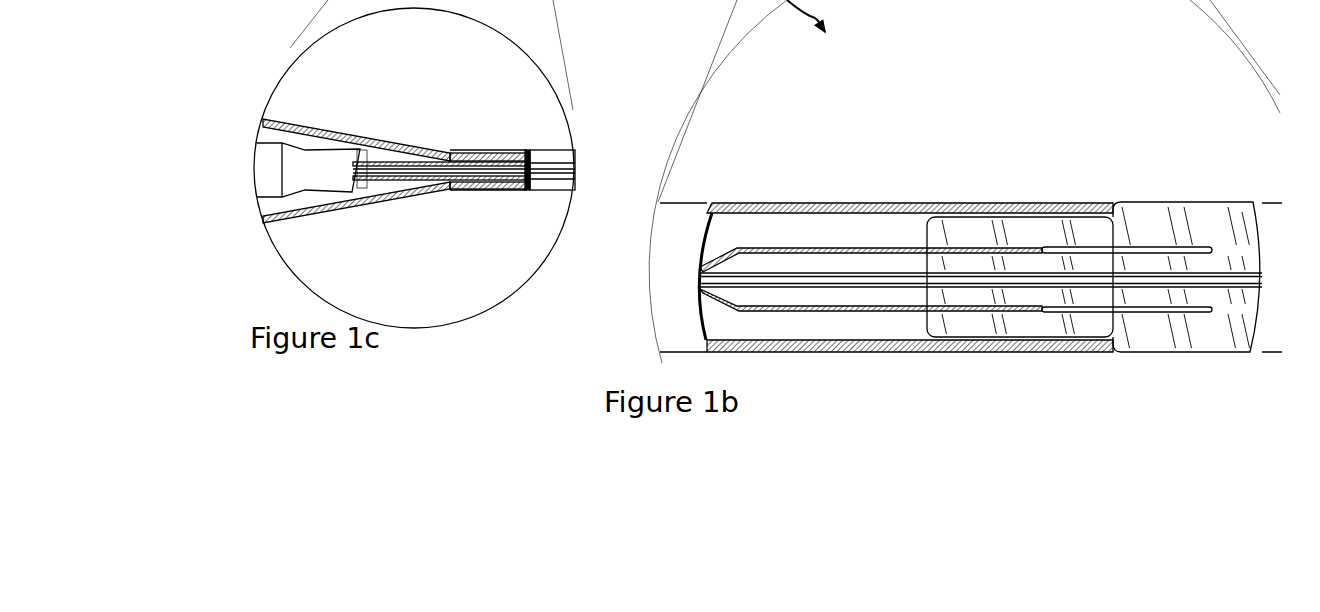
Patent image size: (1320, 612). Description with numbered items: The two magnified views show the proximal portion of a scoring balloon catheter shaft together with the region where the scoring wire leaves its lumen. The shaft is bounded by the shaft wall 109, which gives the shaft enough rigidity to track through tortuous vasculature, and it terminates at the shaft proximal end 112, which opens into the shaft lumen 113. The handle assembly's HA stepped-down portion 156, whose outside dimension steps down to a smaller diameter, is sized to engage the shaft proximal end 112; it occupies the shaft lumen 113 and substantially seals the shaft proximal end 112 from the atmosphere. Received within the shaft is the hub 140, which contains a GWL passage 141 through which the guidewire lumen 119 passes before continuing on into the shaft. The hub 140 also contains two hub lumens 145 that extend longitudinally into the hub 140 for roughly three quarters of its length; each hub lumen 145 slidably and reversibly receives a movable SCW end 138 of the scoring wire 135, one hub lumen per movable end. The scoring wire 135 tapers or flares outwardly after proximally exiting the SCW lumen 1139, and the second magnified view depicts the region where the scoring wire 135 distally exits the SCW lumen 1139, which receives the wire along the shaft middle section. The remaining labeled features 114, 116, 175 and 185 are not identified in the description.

In FIG. 1B, the shaft wall 109 is at (728, 205).
In FIG. 1B, the shaft proximal end 112 is at (1098, 168).
In FIG. 1B, the shaft lumen 113 is at (830, 233).
In FIG. 1B, the tube inner wall 114 is at (886, 220).
In FIG. 1C, the connector 116 is at (335, 167).
In FIG. 1C, the guidewire lumen 119 is at (373, 168).
In FIG. 1B, the guidewire lumen 119 is at (718, 275).
In FIG. 1C, the scoring wire 135 is at (347, 203).
In FIG. 1B, the movable SCW end 138 is at (1040, 312).
In FIG. 1B, the hub 140 is at (1163, 222).
In FIG. 1B, the GWL passage 141 is at (1143, 288).
In FIG. 1B, the hub lumens 145 is at (1055, 309).
In FIG. 1B, the HA stepped-down portion 156 is at (973, 212).
In FIG. 1C, the upper tapered wall 175 is at (410, 158).
In FIG. 1C, the lower hatched wall 185 is at (442, 185).
In FIG. 1C, the SCW lumen 1139 is at (525, 147).